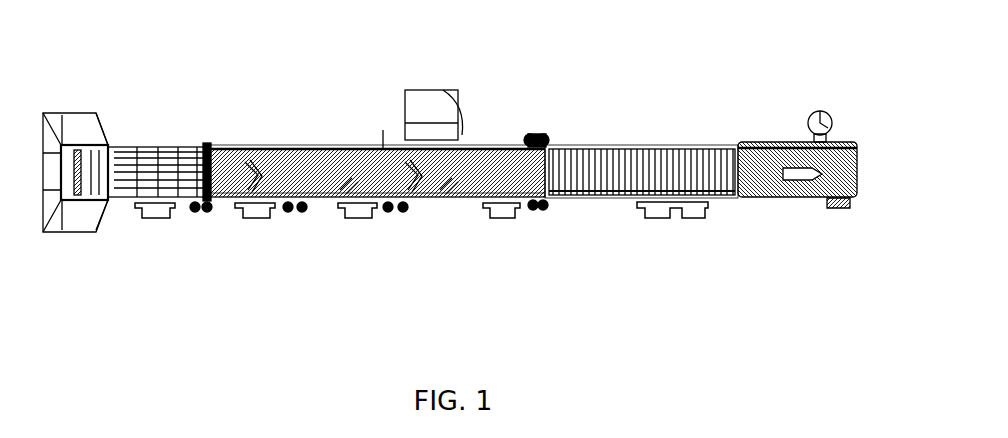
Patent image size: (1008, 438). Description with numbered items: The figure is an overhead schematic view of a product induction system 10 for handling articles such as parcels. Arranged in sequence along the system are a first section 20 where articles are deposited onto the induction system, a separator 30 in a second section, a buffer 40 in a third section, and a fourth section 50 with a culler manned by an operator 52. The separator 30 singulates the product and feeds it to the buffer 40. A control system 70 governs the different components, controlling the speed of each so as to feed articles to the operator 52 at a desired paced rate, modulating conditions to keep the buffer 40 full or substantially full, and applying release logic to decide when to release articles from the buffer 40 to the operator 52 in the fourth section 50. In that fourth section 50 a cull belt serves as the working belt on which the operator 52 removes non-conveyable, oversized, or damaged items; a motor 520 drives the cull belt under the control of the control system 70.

The product induction system 10 is at (496, 74).
The first section 20 is at (43, 112).
The separator 30 is at (527, 112).
The buffer 40 is at (728, 123).
The fourth section 50 is at (835, 232).
The operator 52 is at (811, 110).
The motor 520 is at (830, 208).
The control system 70 is at (170, 218).